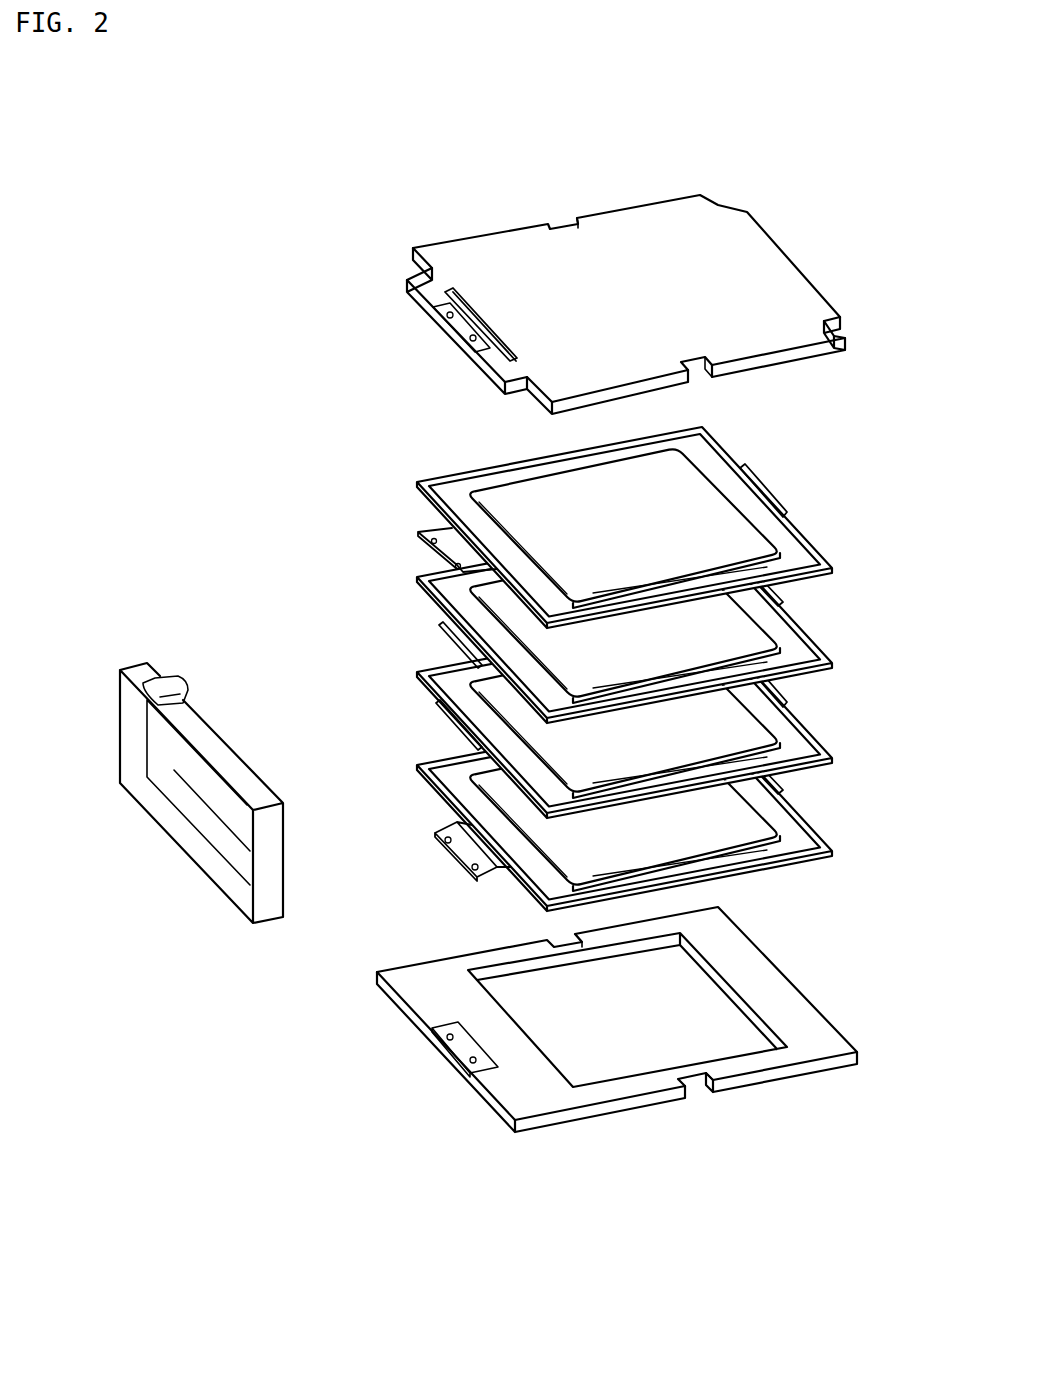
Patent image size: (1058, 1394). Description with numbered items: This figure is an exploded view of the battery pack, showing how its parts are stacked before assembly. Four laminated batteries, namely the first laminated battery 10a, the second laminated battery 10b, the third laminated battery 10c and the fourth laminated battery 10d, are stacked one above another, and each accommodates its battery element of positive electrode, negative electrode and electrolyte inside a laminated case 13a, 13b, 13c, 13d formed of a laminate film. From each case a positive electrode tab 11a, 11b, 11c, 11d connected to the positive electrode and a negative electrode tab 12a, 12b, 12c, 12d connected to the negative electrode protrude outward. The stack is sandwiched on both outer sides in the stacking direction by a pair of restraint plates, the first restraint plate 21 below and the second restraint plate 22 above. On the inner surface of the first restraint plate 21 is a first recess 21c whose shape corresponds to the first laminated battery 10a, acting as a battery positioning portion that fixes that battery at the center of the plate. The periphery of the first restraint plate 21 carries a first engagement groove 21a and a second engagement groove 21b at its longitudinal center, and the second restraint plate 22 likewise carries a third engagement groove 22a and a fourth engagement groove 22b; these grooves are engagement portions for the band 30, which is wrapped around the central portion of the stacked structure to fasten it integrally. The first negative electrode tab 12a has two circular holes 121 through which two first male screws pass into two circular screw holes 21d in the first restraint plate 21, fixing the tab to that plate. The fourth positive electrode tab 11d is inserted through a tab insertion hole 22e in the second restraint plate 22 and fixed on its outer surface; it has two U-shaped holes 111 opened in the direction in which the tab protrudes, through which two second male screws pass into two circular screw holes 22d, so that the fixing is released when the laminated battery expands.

The first laminated battery 10a is at (609, 828).
The second laminated battery 10b is at (594, 717).
The third laminated battery 10c is at (581, 622).
The fourth laminated battery 10d is at (605, 512).
The first positive electrode tab 11a is at (790, 787).
The second positive electrode tab 11b is at (442, 720).
The third positive electrode tab 11c is at (780, 597).
The fourth positive electrode tab 11d is at (392, 538).
The first negative electrode tab 12a is at (408, 881).
The second negative electrode tab 12b is at (785, 690).
The third negative electrode tab 12c is at (443, 623).
The fourth negative electrode tab 12d is at (768, 490).
The laminated case 13a is at (440, 768).
The laminated case 13b is at (440, 674).
The laminated case 13c is at (418, 585).
The laminated case 13d is at (445, 478).
The U-shaped hole 111 is at (432, 541).
The circular hole 121 is at (472, 870).
The first restraint plate 21 is at (570, 1073).
The first engagement groove 21a is at (700, 1097).
The second engagement groove 21b is at (558, 935).
The first recess 21c is at (610, 1083).
The circular screw hole 21d is at (447, 1038).
The second restraint plate 22 is at (578, 248).
The third engagement groove 22a is at (706, 377).
The fourth engagement groove 22b is at (551, 222).
The circular screw hole 22d is at (395, 329).
The tab insertion hole 22e is at (448, 290).
The band 30 is at (187, 857).